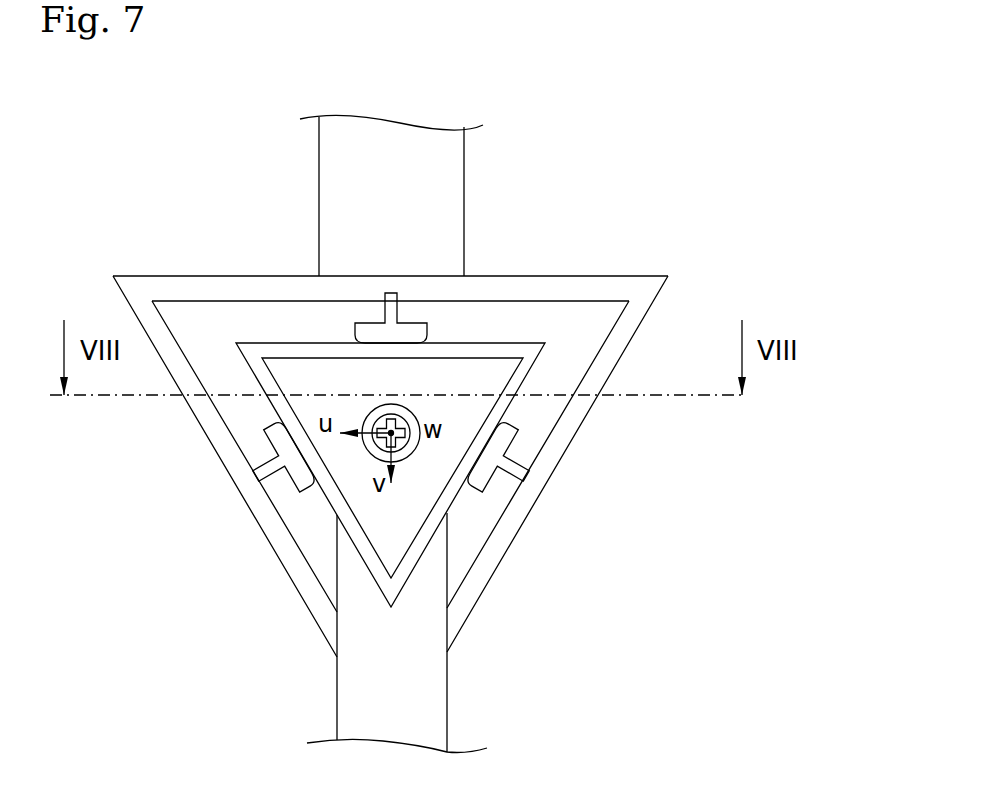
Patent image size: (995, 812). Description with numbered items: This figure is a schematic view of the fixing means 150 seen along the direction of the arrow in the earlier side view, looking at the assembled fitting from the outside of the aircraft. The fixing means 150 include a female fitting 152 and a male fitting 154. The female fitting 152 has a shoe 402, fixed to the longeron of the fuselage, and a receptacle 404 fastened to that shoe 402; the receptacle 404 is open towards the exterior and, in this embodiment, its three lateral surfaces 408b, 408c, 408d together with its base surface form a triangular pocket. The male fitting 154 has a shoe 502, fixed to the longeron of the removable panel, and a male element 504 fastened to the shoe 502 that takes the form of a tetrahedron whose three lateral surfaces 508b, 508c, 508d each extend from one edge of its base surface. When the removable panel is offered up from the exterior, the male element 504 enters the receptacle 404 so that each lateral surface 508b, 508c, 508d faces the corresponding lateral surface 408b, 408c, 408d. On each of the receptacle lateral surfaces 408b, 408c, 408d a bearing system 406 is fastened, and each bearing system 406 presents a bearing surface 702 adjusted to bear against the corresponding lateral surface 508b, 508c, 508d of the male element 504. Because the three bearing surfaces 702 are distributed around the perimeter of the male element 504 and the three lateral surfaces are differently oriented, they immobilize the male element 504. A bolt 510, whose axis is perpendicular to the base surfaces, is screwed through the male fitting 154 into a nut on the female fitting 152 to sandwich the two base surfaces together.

The fixing means 150 is at (685, 200).
The female fitting 152 is at (143, 228).
The male fitting 154 is at (252, 665).
The shoe of the female fitting 402 is at (320, 158).
The receptacle 404 is at (702, 278).
The bearing system 406 is at (490, 467).
The lateral surface of the receptacle 408b is at (498, 530).
The lateral surface of the receptacle 408c is at (528, 301).
The lateral surface of the receptacle 408d is at (223, 422).
The shoe of the male fitting 502 is at (415, 710).
The male element 504 is at (680, 458).
The lateral surface of the male element 508b is at (449, 506).
The lateral surface of the male element 508c is at (467, 343).
The lateral surface of the male element 508d is at (322, 490).
The bolt 510 is at (377, 453).
The bearing surface 702 is at (479, 445).